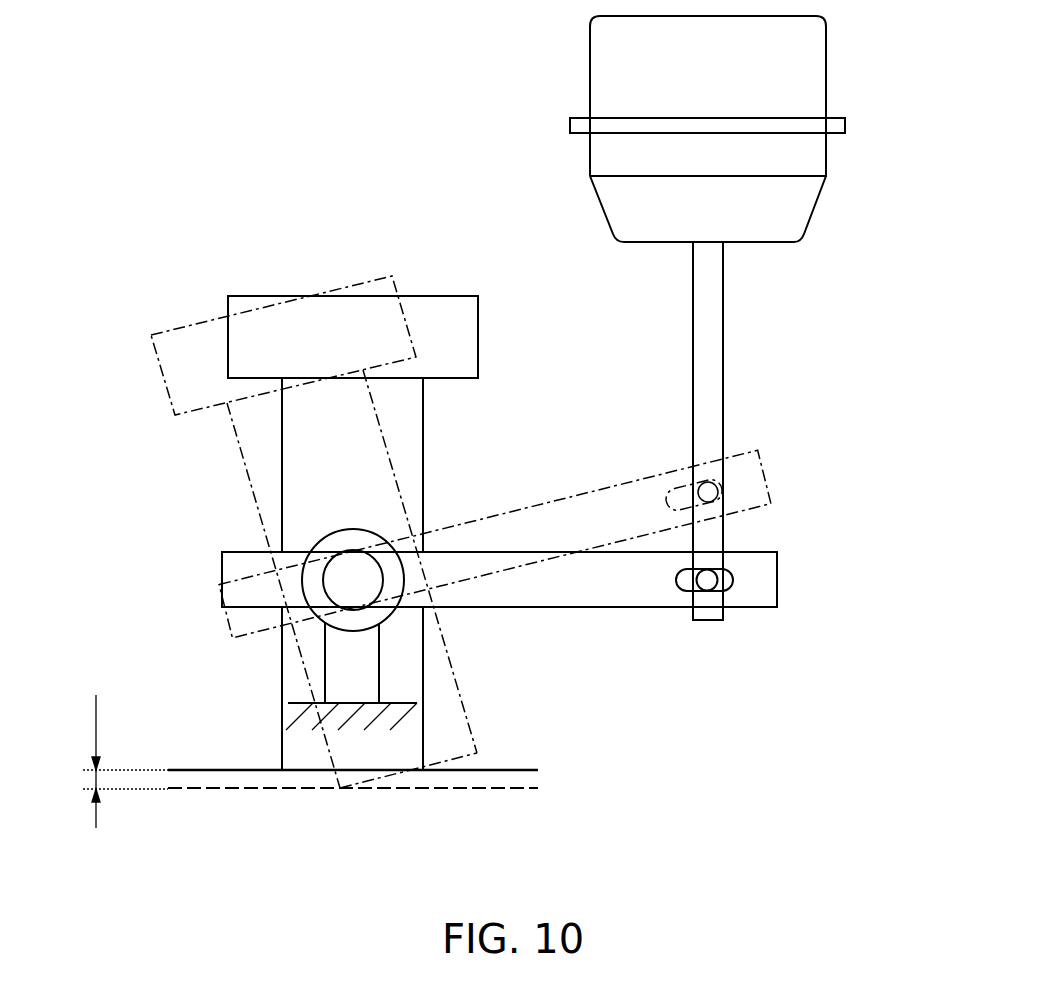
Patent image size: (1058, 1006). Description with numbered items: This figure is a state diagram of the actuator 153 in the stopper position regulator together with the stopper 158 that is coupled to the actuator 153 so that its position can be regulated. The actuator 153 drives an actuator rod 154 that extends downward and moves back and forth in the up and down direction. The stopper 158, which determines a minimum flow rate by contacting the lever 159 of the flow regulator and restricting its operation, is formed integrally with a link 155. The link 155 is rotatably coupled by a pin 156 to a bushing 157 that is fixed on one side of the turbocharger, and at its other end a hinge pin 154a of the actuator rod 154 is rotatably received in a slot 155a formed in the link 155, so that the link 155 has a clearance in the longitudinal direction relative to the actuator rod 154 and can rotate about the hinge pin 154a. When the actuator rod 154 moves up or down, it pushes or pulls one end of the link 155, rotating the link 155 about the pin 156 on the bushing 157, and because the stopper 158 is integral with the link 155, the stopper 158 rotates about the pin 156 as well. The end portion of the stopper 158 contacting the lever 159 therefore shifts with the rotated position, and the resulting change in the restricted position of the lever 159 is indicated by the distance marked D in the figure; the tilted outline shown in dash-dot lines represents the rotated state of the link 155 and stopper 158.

The actuator 153 is at (607, 62).
The actuator rod 154 is at (713, 353).
The hinge pin 154a is at (727, 588).
The link 155 is at (637, 590).
The slot 155a is at (738, 582).
The pin 156 is at (357, 592).
The bushing 157 is at (277, 593).
The stopper 158 is at (447, 308).
The lever 159 is at (490, 780).